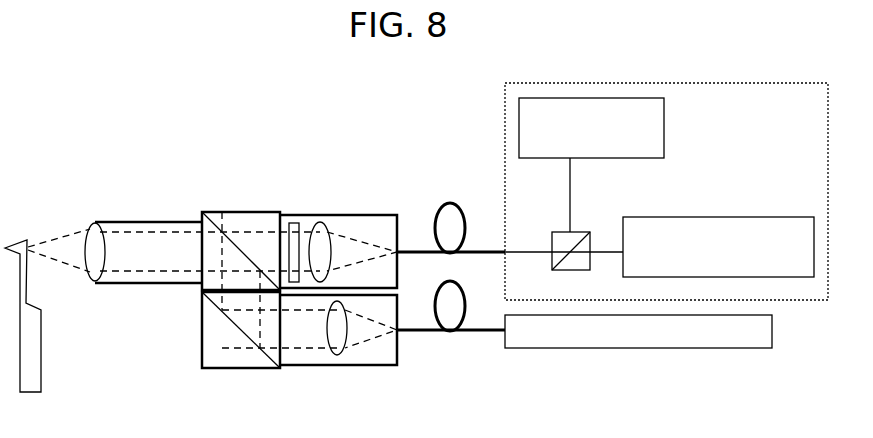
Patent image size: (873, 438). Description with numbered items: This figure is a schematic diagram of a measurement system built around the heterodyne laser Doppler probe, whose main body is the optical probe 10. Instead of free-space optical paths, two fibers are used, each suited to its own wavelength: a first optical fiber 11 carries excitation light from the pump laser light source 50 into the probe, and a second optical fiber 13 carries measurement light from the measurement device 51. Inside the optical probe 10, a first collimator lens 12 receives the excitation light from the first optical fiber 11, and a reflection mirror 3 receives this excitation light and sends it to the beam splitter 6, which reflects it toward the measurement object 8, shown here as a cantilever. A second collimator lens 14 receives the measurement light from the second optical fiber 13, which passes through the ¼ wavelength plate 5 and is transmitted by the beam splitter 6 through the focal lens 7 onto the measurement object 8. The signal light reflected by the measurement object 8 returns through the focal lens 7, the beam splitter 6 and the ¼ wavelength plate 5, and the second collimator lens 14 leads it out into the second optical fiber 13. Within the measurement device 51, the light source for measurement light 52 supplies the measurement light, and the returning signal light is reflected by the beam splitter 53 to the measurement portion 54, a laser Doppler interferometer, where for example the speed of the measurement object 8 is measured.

The reflection mirror 3 is at (270, 370).
The ¼ wavelength plate 5 is at (297, 223).
The beam splitter 6 is at (214, 213).
The focal lens 7 is at (95, 223).
The measurement object 8 is at (27, 240).
The optical probe 10 is at (371, 206).
The first optical fiber 11 is at (485, 328).
The first collimator lens 12 is at (337, 357).
The second optical fiber 13 is at (485, 250).
The second collimator lens 14 is at (319, 222).
The pump laser light source 50 is at (628, 349).
The measurement device 51 is at (505, 94).
The light source for measurement light 52 is at (741, 216).
The beam splitter 53 is at (590, 237).
The measurement portion 54 is at (672, 148).